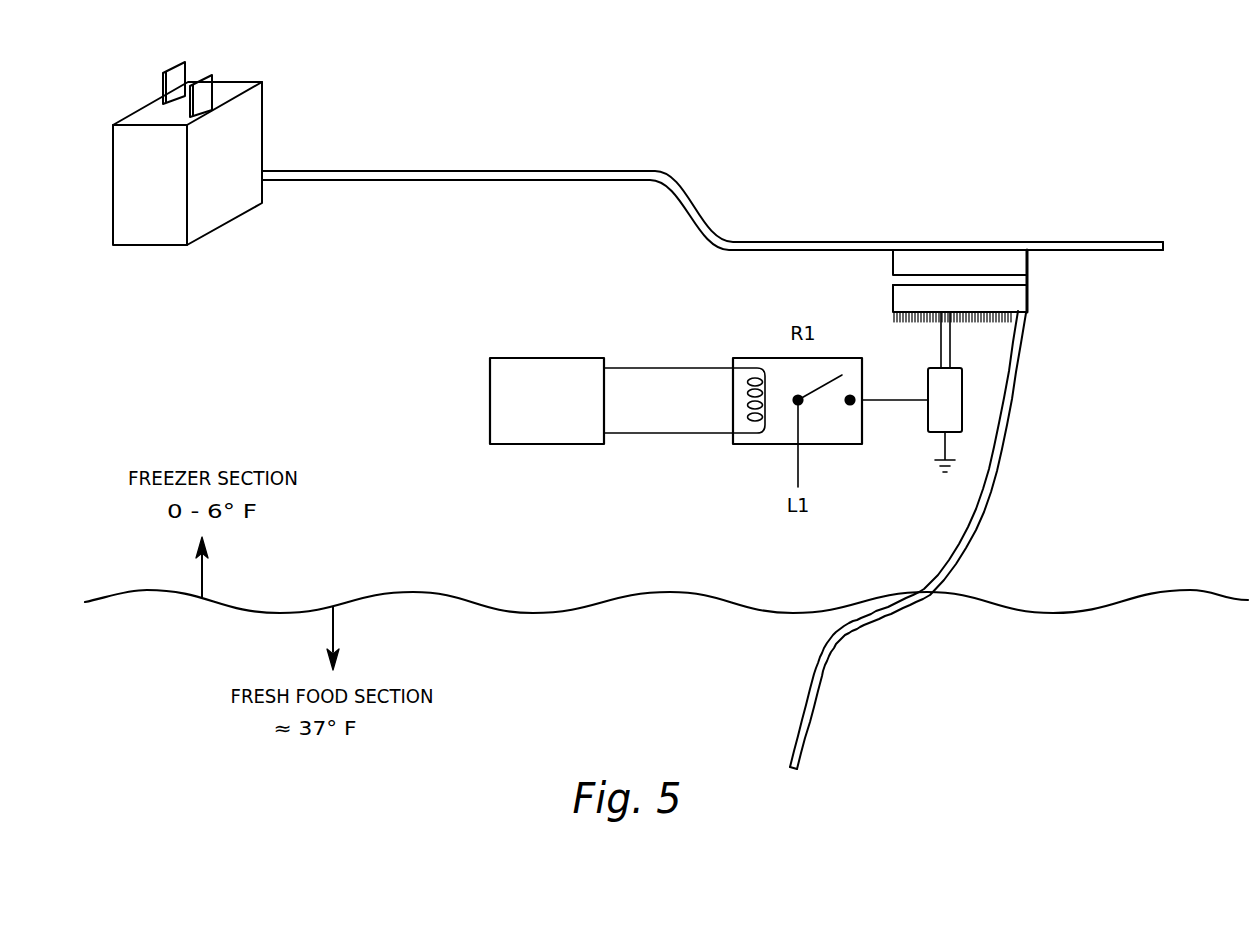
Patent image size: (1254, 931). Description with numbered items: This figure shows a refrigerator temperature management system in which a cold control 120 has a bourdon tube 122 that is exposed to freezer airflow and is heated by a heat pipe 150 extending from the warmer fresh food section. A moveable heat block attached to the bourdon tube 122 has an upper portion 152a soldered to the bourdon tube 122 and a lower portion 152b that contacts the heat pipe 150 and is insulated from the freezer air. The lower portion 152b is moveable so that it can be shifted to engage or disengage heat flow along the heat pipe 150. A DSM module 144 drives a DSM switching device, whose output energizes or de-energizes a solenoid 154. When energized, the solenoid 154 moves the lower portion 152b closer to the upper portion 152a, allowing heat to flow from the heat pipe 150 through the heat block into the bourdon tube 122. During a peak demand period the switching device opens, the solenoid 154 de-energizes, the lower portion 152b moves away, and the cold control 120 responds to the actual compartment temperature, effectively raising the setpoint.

The cold control 120 is at (148, 243).
The bourdon tube 122 is at (565, 171).
The DSM module 144 is at (538, 358).
The heat pipe 150 is at (837, 643).
The upper portion of heat block 152a is at (1010, 262).
The lower portion of heat block 152b is at (1010, 295).
The solenoid 154 is at (955, 403).